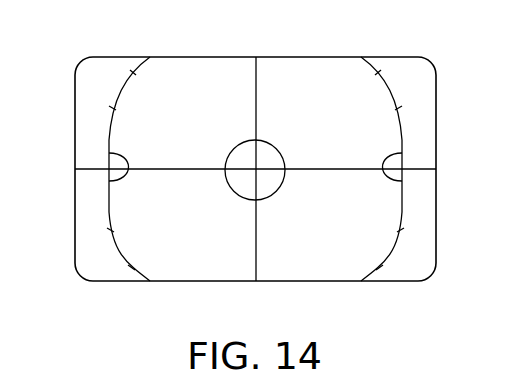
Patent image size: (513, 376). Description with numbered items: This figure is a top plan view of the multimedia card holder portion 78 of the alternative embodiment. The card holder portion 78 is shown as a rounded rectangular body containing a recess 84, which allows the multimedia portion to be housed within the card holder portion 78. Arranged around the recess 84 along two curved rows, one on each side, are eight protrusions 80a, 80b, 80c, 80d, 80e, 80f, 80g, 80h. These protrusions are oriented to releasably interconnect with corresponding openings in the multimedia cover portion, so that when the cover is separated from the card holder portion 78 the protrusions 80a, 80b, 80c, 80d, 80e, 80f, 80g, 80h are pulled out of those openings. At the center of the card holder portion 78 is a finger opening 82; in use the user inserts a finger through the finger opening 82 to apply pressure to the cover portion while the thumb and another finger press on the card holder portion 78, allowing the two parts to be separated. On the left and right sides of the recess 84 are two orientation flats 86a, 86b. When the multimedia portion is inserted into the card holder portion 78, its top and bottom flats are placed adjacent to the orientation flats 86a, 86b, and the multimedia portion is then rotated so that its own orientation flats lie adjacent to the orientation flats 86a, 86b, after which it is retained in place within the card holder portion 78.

The multimedia card holder portion 78 is at (402, 64).
The recess 84 is at (240, 64).
The finger opening 82 is at (248, 195).
The protrusion 80a is at (136, 73).
The protrusion 80b is at (113, 109).
The protrusion 80c is at (111, 231).
The protrusion 80d is at (133, 268).
The protrusion 80e is at (375, 73).
The protrusion 80f is at (398, 110).
The protrusion 80g is at (399, 232).
The protrusion 80h is at (378, 268).
The orientation flat 86a is at (111, 156).
The orientation flat 86b is at (402, 178).